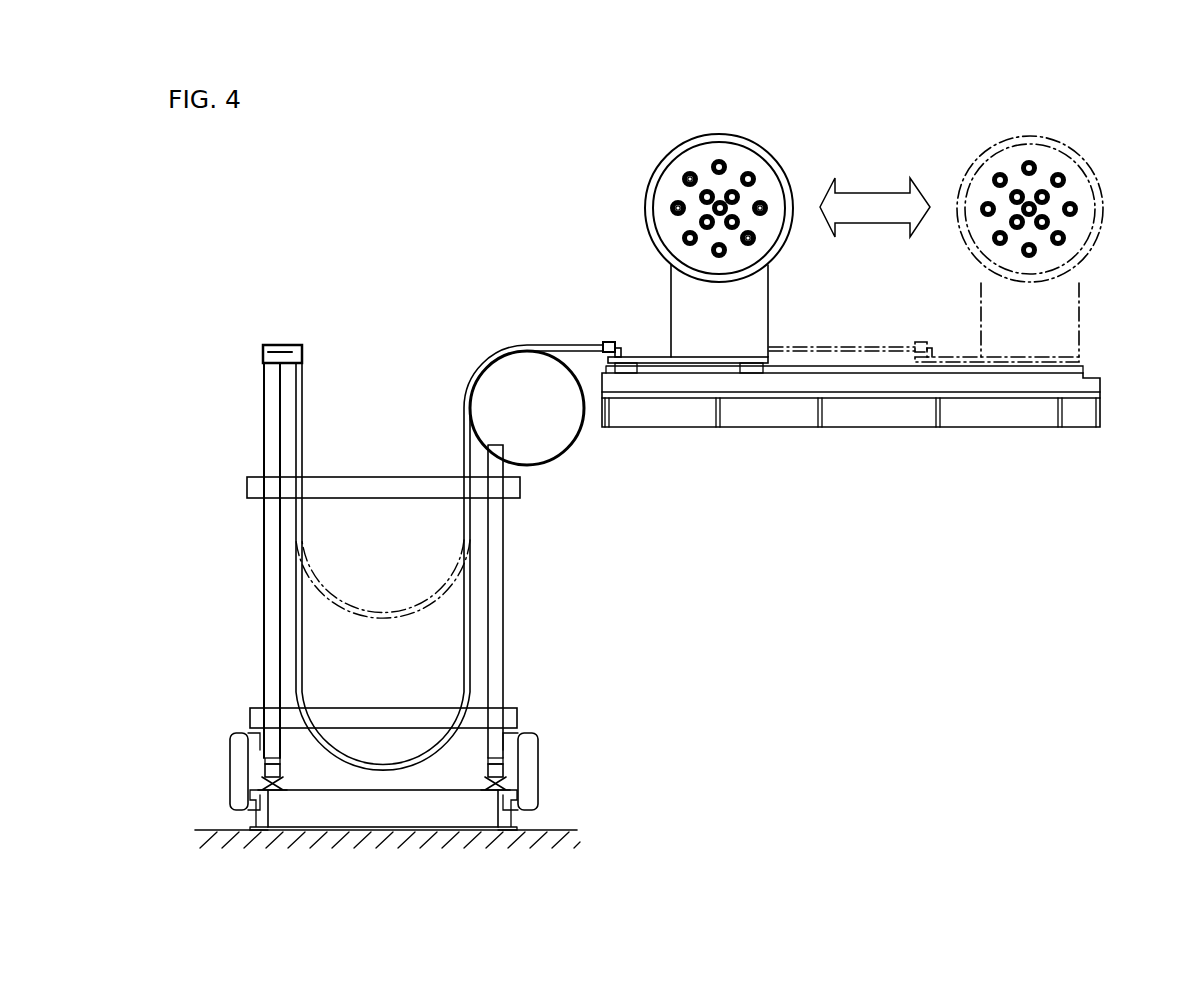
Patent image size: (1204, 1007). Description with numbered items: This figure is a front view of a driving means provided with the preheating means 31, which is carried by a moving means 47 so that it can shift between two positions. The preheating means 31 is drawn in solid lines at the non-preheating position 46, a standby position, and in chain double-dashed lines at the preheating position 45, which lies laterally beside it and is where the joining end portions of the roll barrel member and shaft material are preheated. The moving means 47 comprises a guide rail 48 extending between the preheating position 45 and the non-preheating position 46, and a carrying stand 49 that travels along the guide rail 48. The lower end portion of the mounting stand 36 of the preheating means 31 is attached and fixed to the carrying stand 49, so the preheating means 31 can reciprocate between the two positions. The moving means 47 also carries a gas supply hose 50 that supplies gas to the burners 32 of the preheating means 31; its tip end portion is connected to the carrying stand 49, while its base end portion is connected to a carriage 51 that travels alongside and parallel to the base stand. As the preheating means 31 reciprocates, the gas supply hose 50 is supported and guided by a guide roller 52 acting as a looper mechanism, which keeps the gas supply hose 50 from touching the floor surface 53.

The preheating means 31 is at (733, 165).
The burners 32 is at (678, 208).
The mounting stand 36 is at (672, 292).
The preheating position 45 is at (1033, 130).
The non-preheating position 46 is at (866, 183).
The moving means 47 is at (537, 312).
The guide rail 48 is at (1104, 405).
The carrying stand 49 is at (628, 357).
The gas supply hose 50 is at (568, 340).
The carriage 51 is at (523, 697).
The guide roller 52 is at (558, 425).
The floor surface 53 is at (543, 830).